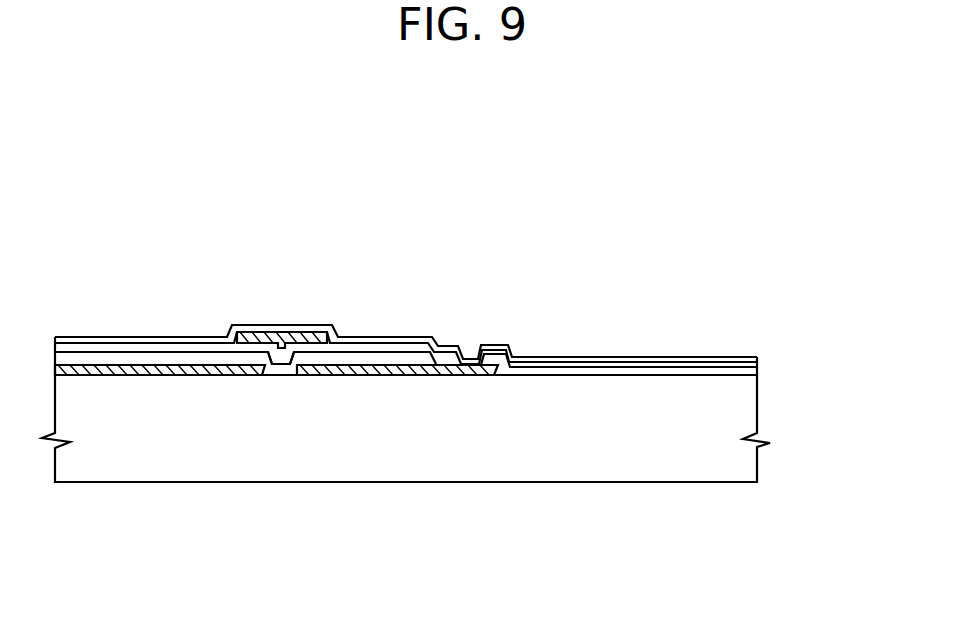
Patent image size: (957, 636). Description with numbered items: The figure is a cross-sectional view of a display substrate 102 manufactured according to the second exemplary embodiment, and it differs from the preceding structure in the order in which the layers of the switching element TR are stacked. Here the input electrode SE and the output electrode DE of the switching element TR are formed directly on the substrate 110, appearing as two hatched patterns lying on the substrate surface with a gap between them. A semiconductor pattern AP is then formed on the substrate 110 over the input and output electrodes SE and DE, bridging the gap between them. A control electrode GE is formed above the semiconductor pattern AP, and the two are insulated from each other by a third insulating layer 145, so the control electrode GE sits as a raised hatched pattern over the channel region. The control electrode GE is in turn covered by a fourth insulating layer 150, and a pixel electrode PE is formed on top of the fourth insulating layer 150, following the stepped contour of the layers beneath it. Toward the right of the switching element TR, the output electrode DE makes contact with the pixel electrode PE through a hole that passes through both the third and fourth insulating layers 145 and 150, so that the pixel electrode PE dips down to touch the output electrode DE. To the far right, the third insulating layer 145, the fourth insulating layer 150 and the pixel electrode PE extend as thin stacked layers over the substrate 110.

The display substrate 102 is at (451, 210).
The substrate 110 is at (750, 468).
The third insulating layer 145 is at (757, 372).
The fourth insulating layer 150 is at (757, 366).
The pixel electrode PE is at (757, 358).
The switching element TR is at (276, 467).
The input electrode SE is at (203, 372).
The output electrode DE is at (305, 372).
The control electrode GE is at (243, 340).
The semiconductor pattern AP is at (357, 356).